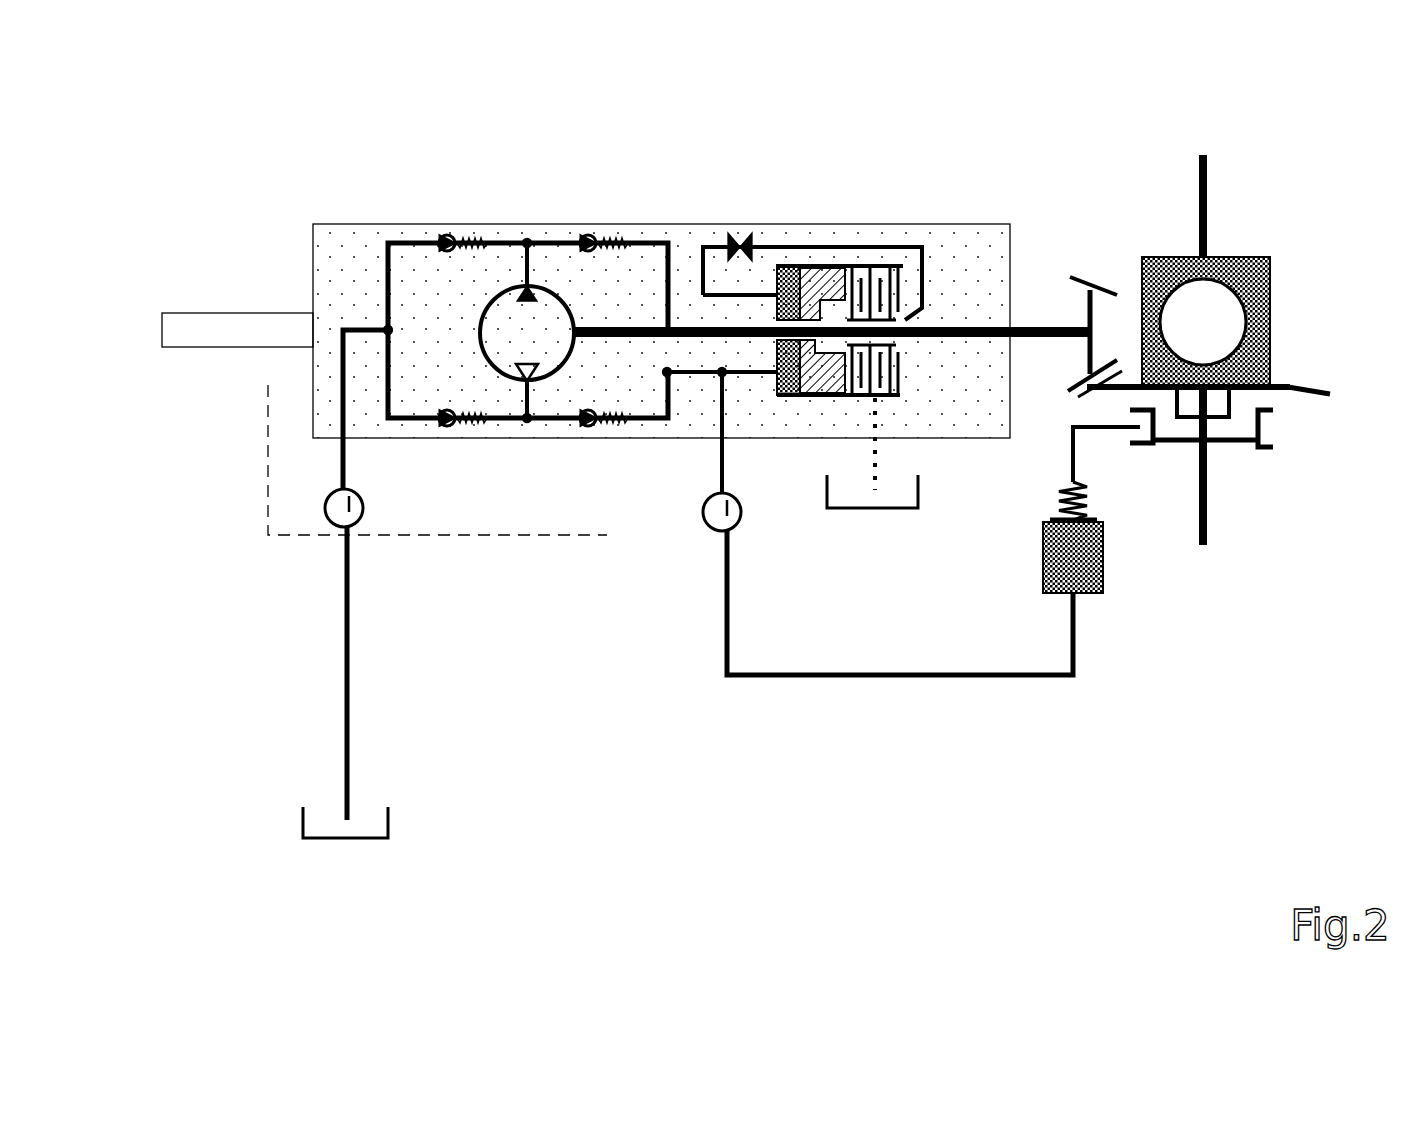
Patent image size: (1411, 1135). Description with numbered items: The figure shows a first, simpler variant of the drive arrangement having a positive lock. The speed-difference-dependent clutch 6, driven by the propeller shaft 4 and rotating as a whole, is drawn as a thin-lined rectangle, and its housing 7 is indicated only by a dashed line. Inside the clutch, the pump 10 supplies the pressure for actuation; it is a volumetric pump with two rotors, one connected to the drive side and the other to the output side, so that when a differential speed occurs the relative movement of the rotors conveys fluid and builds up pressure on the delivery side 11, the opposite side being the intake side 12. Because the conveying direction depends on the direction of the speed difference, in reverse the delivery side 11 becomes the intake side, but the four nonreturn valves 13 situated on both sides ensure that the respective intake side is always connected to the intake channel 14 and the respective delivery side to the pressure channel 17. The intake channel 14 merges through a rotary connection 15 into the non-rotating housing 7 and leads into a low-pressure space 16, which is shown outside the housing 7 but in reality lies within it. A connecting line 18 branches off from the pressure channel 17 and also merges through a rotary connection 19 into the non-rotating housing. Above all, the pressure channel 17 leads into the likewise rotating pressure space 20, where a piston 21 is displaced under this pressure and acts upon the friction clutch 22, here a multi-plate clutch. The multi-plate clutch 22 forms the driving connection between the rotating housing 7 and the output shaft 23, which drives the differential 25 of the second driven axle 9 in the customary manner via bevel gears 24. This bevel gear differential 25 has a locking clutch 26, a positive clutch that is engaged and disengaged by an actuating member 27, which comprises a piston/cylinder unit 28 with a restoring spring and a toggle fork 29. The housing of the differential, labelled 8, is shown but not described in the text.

The propeller shaft 4 is at (230, 323).
The speed-difference-dependent clutch 6 is at (692, 247).
The housing 7 is at (307, 535).
The differential housing 8 is at (1285, 297).
The second driven axle 9 is at (1223, 180).
The pump 10 is at (531, 325).
The delivery side 11 is at (527, 243).
The intake side 12 is at (527, 418).
The nonreturn valves 13 is at (447, 243).
The intake channel 14 is at (342, 437).
The rotary connection 15 is at (344, 505).
The low-pressure space 16 is at (321, 817).
The pressure channel 17 is at (695, 372).
The connecting line 18 is at (957, 678).
The rotary connection 19 is at (728, 530).
The pressure space 20 is at (798, 265).
The piston 21 is at (852, 266).
The friction clutch 22 is at (897, 266).
The output shaft 23 is at (1010, 322).
The bevel gears 24 is at (1093, 392).
The differential 25 is at (1232, 342).
The locking clutch 26 is at (1262, 428).
The actuating member 27 is at (1063, 600).
The piston/cylinder unit 28 is at (1080, 597).
The toggle fork 29 is at (1140, 427).